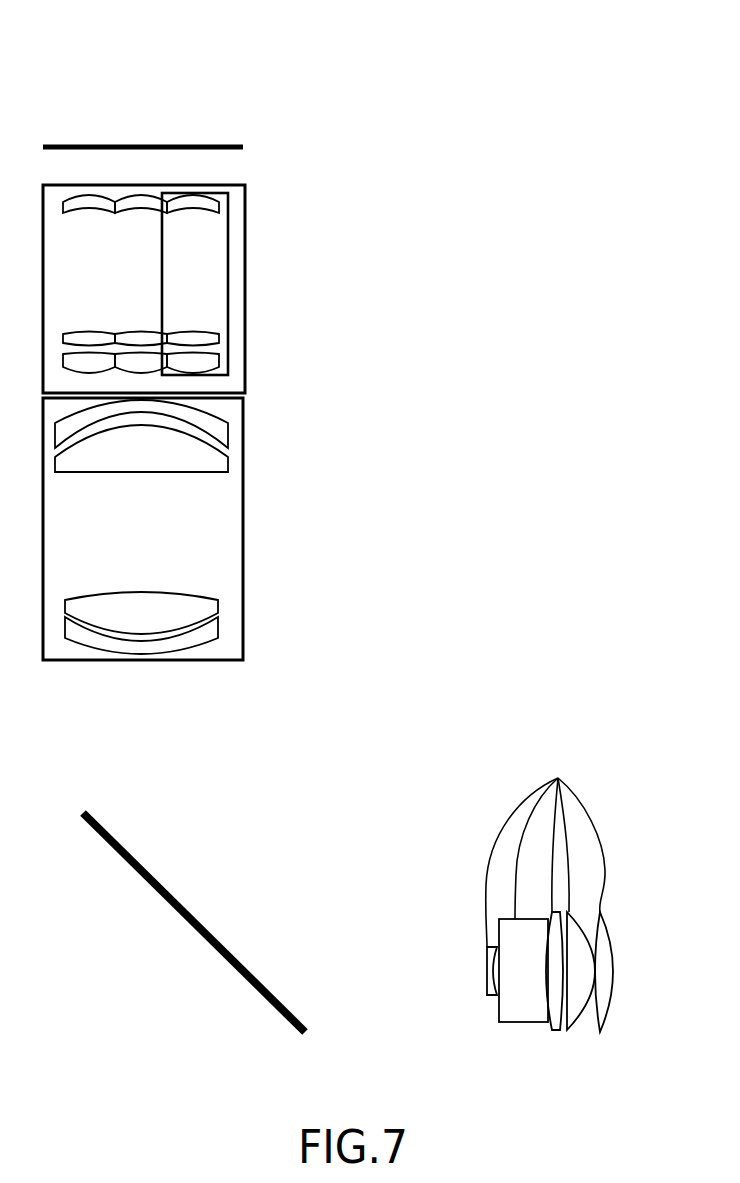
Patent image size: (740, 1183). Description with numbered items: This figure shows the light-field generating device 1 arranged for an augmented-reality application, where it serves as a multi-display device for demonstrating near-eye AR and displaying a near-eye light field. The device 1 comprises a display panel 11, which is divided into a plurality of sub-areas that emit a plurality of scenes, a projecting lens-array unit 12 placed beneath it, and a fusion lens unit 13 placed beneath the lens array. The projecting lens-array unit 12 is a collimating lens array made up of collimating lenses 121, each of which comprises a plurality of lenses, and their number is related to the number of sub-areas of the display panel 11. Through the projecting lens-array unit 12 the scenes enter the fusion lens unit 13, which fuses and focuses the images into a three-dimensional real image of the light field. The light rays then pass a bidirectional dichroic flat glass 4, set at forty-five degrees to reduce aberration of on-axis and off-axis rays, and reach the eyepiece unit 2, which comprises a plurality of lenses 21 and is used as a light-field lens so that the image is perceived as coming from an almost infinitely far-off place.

The light-field generating device 1 is at (251, 92).
The display panel 11 is at (227, 150).
The projecting lens-array unit 12 is at (245, 233).
The collimating lens 121 is at (228, 320).
The fusion lens unit 13 is at (243, 523).
The eyepiece unit 2 is at (592, 683).
The lenses 21 is at (545, 849).
The bidirectional dichroic flat glass 4 is at (140, 863).